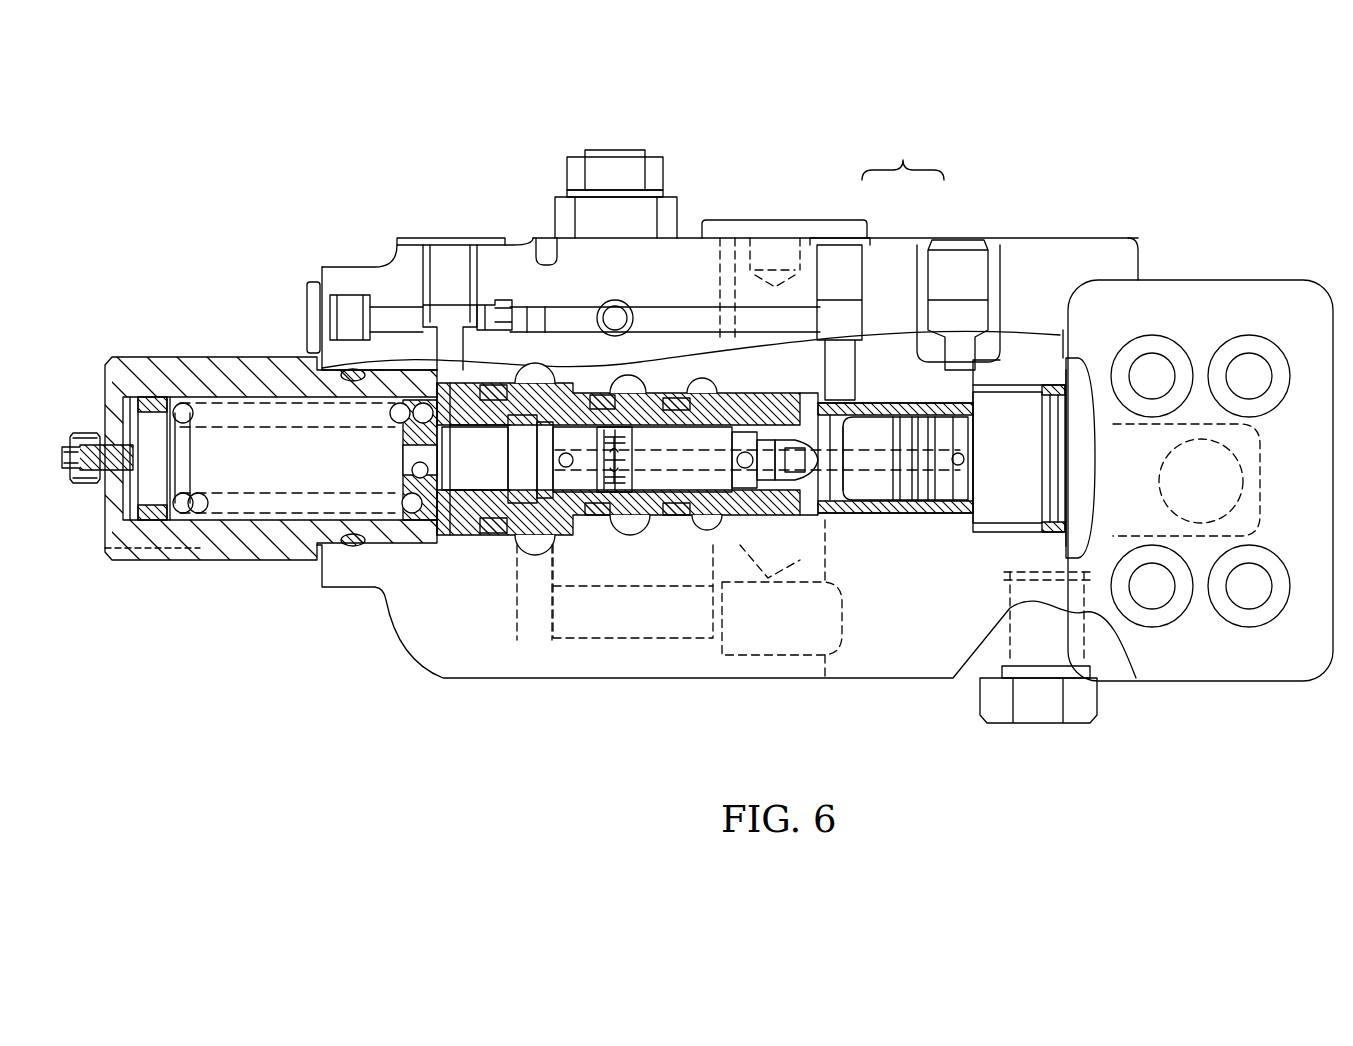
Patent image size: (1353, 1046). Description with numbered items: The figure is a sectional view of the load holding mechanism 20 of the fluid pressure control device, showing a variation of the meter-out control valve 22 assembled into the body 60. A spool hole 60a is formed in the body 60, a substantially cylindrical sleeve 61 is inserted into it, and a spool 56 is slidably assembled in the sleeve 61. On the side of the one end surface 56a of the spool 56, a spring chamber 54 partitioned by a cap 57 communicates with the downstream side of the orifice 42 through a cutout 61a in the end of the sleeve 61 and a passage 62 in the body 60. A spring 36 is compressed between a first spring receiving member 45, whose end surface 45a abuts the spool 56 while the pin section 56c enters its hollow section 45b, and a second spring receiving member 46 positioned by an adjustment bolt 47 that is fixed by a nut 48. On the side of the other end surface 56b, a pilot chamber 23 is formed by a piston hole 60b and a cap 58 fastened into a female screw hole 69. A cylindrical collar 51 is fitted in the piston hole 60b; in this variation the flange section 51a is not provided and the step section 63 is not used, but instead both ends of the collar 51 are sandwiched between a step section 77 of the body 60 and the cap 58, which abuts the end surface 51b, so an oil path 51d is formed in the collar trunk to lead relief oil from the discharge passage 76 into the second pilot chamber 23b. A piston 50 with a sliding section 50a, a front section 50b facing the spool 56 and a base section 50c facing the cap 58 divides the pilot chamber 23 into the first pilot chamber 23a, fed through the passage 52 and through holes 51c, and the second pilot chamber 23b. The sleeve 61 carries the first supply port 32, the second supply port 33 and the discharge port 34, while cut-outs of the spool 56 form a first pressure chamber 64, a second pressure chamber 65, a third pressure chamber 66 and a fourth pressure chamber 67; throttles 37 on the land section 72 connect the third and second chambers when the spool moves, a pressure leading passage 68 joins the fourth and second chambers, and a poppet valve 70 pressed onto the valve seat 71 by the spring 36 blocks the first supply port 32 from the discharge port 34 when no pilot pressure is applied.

The load holding mechanism 20 is at (767, 160).
The meter-out control valve 22 is at (640, 495).
The pilot chamber 23 is at (903, 158).
The first pilot chamber 23a is at (950, 345).
The second pilot chamber 23b is at (800, 300).
The first supply port 32 is at (590, 497).
The second supply port 33 is at (690, 495).
The discharge port 34 is at (540, 500).
The spring 36 is at (183, 420).
The throttles 37 is at (603, 432).
The orifice 42 is at (487, 318).
The first spring receiving member 45 is at (440, 535).
The end surface 45a is at (453, 535).
The hollow section 45b is at (425, 500).
The second spring receiving member 46 is at (153, 422).
The adjustment bolt 47 is at (90, 448).
The nut 48 is at (84, 482).
The piston 50 is at (940, 500).
The sliding section 50a is at (897, 515).
The front section 50b is at (865, 515).
The base section 50c is at (1015, 500).
The collar 51 is at (957, 532).
The flange section 51a is at (1052, 535).
The end surface 51b is at (1070, 380).
The through holes 51c is at (960, 430).
The oil path 51d is at (845, 345).
The passage 52 is at (958, 330).
The spring chamber 54 is at (218, 450).
The spool 56 is at (500, 535).
The one end surface 56a is at (400, 300).
The other end surface 56b is at (812, 516).
The pin section 56c is at (330, 330).
The cap 57 is at (252, 368).
The cap 58 is at (1060, 690).
The body 60 is at (388, 612).
The spool hole 60a is at (800, 520).
The piston hole 60b is at (923, 520).
The sleeve 61 is at (790, 482).
The cutout 61a is at (433, 370).
The passage 62 is at (450, 335).
The step section 63 is at (1000, 600).
The first pressure chamber 64 is at (515, 548).
The second pressure chamber 65 is at (570, 500).
The third pressure chamber 66 is at (620, 495).
The fourth pressure chamber 67 is at (740, 492).
The pressure leading passage 68 is at (666, 550).
The female screw hole 69 is at (1085, 380).
The poppet valve 70 is at (548, 385).
The valve seat 71 is at (560, 380).
The land section 72 is at (568, 240).
The discharge passage 76 is at (680, 300).
The step section 77 is at (840, 400).